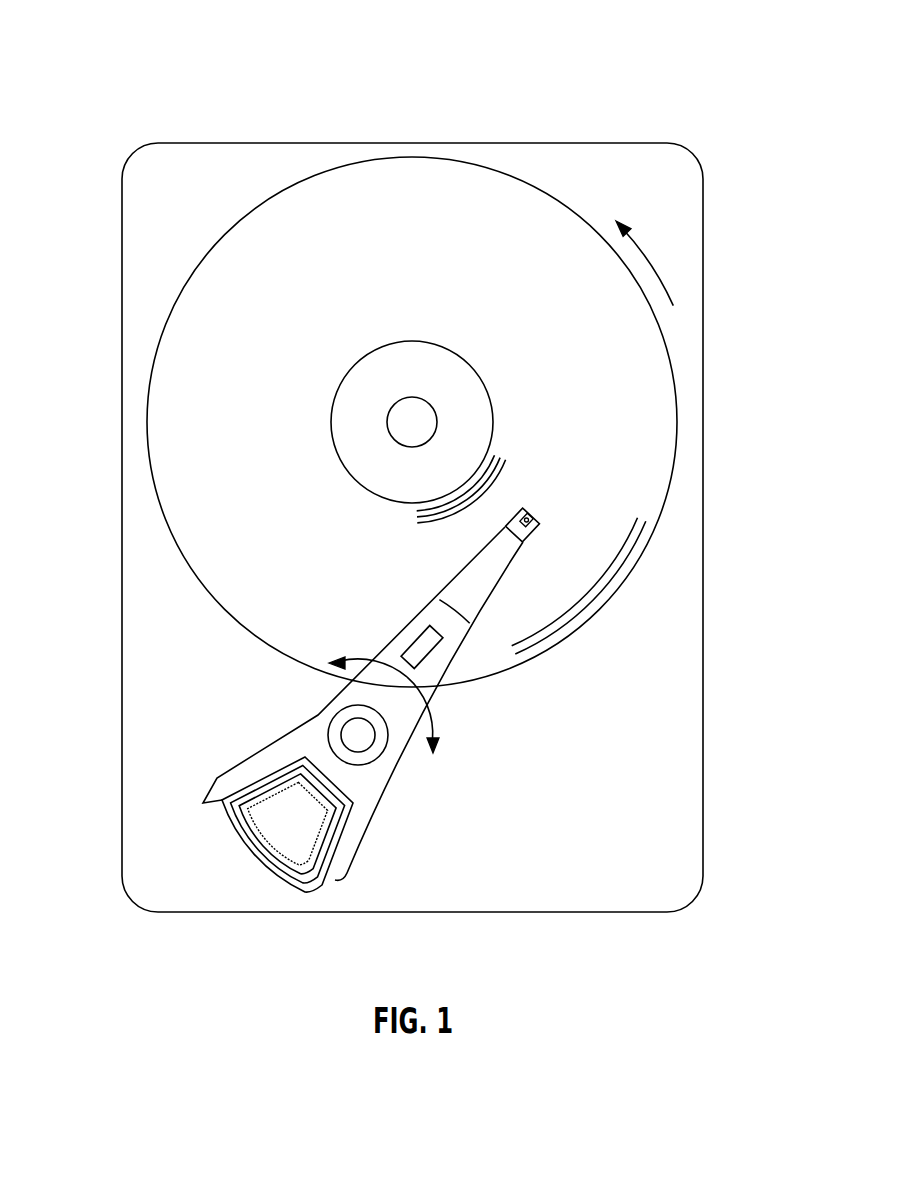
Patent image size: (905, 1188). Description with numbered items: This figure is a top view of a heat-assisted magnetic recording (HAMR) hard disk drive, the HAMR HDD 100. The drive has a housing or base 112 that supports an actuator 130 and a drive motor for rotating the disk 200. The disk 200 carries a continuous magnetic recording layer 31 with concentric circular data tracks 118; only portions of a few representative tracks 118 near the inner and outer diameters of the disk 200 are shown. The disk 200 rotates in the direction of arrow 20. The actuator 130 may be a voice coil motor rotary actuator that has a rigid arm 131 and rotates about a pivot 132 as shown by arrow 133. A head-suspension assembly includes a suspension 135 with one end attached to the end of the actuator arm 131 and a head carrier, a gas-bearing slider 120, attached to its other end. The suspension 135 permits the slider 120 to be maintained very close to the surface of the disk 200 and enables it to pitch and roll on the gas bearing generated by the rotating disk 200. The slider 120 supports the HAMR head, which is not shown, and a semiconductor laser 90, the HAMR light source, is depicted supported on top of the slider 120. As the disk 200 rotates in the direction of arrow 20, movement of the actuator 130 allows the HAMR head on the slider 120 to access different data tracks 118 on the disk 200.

The HAMR HDD 100 is at (121, 63).
The housing or base 112 is at (630, 142).
The disk 200 is at (272, 198).
The continuous magnetic recording layer 31 is at (655, 386).
The arrow 20 is at (645, 247).
The concentric circular data tracks 118 is at (660, 516).
The semiconductor laser 90 is at (528, 512).
The gas-bearing slider 120 is at (534, 532).
The suspension 135 is at (452, 590).
The rigid arm 131 is at (398, 640).
The arrow 133 is at (435, 712).
The pivot 132 is at (350, 730).
The actuator 130 is at (203, 800).